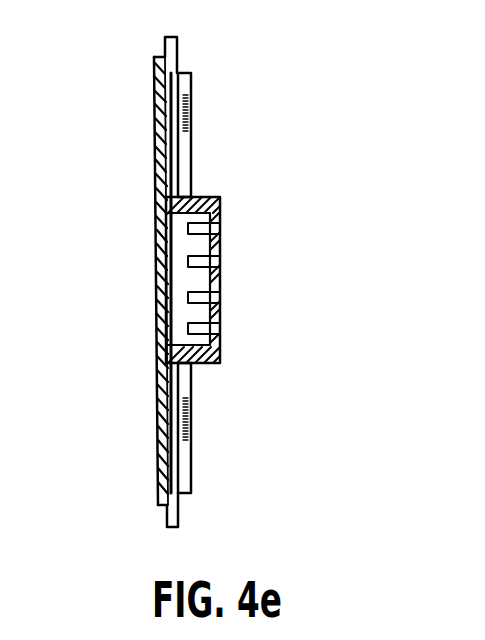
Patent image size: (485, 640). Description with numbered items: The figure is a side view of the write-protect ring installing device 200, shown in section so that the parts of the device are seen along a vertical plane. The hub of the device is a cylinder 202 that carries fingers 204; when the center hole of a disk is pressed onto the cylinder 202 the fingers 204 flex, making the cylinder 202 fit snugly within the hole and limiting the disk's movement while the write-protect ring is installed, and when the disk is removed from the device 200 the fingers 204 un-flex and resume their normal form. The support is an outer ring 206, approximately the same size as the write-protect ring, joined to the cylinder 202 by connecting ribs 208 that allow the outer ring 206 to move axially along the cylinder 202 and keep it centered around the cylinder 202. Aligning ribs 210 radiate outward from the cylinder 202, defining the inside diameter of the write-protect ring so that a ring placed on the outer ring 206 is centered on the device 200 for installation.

The write-protect ring installing device 200 is at (239, 70).
The cylinder 202 is at (222, 201).
The fingers 204 is at (210, 274).
The outer ring 206 is at (170, 520).
The connecting ribs 208 is at (160, 131).
The aligning ribs 210 is at (193, 134).